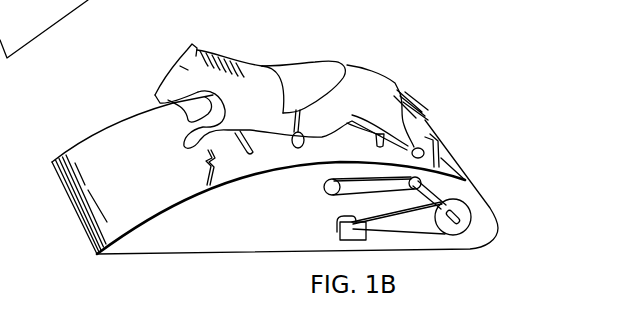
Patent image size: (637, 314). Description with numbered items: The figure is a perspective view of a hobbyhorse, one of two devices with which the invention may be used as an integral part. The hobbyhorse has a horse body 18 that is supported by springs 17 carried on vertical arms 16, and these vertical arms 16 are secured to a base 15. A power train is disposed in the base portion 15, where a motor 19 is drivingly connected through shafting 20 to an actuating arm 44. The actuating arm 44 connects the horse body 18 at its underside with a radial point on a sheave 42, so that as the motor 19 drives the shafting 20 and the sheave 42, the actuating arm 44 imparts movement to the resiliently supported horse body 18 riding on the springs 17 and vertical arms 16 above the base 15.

The base 15 is at (160, 255).
The vertical arms 16 is at (441, 158).
The springs 17 is at (427, 135).
The horse body 18 is at (369, 72).
The motor 19 is at (335, 225).
The shafting 20 is at (447, 190).
The sheave 42 is at (323, 189).
The actuating arm 44 is at (374, 141).